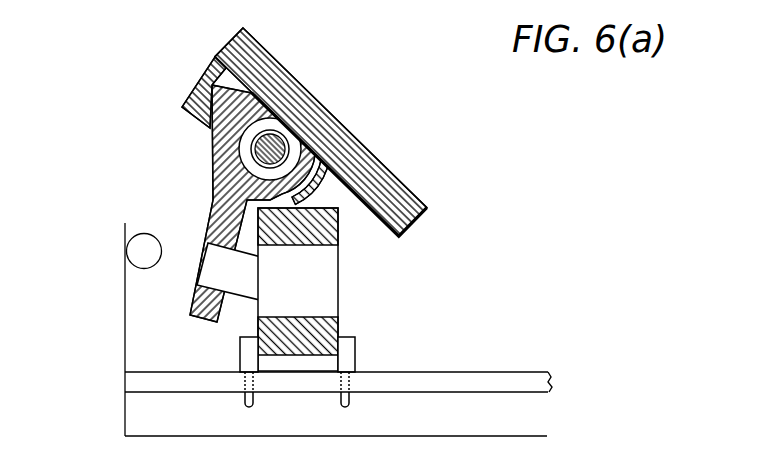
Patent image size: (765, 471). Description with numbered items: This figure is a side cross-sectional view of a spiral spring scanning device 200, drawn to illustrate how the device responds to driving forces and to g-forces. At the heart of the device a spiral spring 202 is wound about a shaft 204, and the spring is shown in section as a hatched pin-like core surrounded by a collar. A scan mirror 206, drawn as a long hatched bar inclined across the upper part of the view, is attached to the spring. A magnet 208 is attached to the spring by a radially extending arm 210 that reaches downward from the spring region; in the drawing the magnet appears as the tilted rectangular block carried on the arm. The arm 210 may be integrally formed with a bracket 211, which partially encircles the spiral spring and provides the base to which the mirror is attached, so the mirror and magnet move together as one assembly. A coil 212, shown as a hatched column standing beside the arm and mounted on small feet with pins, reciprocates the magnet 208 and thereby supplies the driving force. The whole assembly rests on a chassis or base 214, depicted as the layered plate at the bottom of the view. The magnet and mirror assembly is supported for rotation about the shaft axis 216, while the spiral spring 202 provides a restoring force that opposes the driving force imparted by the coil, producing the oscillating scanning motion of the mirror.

The spiral spring scanning device 200 is at (104, 308).
The spiral spring 202 is at (292, 133).
The shaft 204 is at (337, 123).
The scan mirror 206 is at (410, 187).
The magnet 208 is at (280, 270).
The arm 210 is at (220, 213).
The bracket 211 is at (213, 168).
The coil 212 is at (368, 353).
The base 214 is at (530, 408).
The shaft axis 216 is at (213, 152).